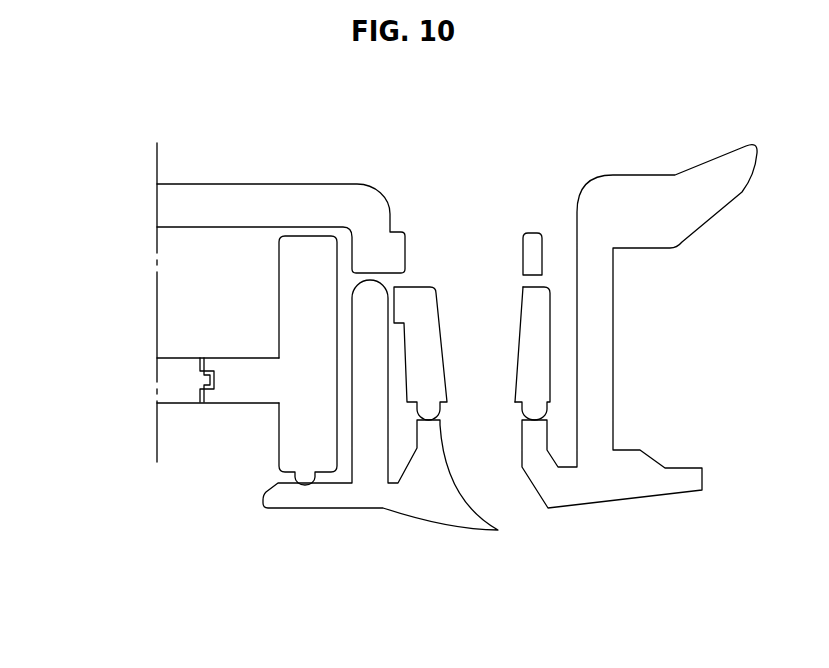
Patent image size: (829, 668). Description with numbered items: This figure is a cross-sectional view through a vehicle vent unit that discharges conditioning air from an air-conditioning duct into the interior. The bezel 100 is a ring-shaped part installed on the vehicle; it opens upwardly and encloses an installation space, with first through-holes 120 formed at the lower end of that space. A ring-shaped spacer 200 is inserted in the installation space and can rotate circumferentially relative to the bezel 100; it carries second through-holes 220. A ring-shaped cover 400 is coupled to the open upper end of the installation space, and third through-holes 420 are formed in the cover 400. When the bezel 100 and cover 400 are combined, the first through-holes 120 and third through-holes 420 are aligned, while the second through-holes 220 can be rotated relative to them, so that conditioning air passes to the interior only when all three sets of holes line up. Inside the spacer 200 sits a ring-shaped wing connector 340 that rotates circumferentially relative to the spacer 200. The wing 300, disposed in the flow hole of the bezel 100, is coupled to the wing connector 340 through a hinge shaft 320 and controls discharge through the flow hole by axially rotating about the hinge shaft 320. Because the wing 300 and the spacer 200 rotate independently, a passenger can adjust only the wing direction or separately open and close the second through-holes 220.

The bezel 100 is at (634, 190).
The first through-holes 120 is at (492, 442).
The spacer 200 is at (535, 332).
The second through-holes 220 is at (480, 358).
The wing 300 is at (178, 383).
The hinge shaft 320 is at (232, 383).
The wing connector 340 is at (308, 258).
The cover 400 is at (372, 247).
The third through-holes 420 is at (472, 252).